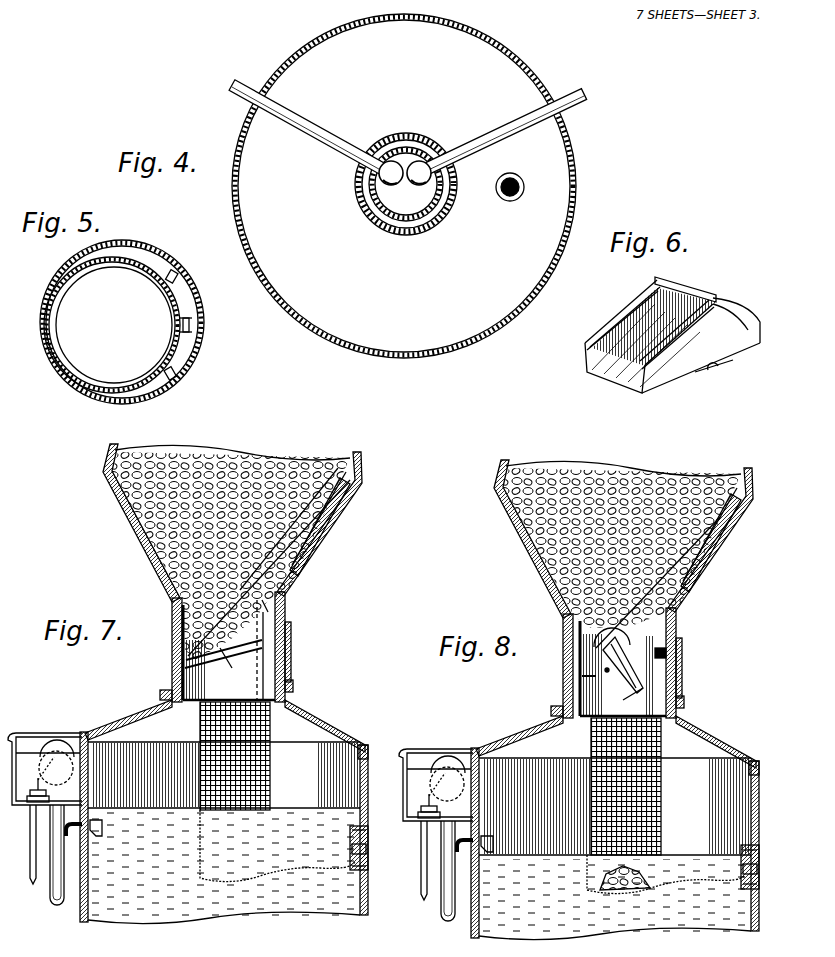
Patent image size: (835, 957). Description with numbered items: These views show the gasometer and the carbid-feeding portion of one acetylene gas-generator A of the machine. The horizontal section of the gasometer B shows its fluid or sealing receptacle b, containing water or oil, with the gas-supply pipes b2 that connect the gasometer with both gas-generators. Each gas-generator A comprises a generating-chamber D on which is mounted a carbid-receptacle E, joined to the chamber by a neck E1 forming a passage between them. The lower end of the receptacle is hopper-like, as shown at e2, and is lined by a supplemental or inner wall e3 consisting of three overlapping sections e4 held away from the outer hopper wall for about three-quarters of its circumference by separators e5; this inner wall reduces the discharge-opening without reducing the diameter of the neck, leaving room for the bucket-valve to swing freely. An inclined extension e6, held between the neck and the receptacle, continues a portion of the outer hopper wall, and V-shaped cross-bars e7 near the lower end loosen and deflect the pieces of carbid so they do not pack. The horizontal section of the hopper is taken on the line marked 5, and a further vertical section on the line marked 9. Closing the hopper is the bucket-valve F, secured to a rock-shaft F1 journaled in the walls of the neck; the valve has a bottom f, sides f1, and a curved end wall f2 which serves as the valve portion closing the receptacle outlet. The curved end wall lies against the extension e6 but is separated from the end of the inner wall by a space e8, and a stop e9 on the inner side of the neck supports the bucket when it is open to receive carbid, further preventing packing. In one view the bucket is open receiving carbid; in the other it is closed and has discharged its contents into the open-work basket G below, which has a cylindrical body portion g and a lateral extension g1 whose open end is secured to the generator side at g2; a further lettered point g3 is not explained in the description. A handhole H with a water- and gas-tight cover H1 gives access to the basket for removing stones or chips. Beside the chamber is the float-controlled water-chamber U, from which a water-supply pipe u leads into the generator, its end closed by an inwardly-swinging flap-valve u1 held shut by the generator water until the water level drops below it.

In FIG. 4, the gasometer B is at (503, 333).
In FIG. 4, the fluid or sealing receptacle b is at (293, 312).
In FIG. 4, the gas-supply pipes b2 is at (236, 90).
In FIG. 5, the carbid-receptacle E is at (198, 356).
In FIG. 7, the carbid-receptacle E is at (297, 460).
In FIG. 8, the carbid-receptacle E is at (614, 544).
In FIG. 7, the neck E1 is at (292, 688).
In FIG. 8, the neck E1 is at (633, 677).
In FIG. 7, the hopper-like lower end e2 is at (312, 561).
In FIG. 8, the hopper-like lower end e2 is at (712, 534).
In FIG. 5, the supplemental or inner wall e3 is at (171, 350).
In FIG. 7, the supplemental or inner wall e3 is at (302, 572).
In FIG. 8, the supplemental or inner wall e3 is at (711, 544).
In FIG. 5, the overlapping sections e4 is at (104, 256).
In FIG. 7, the overlapping sections e4 is at (290, 598).
In FIG. 8, the overlapping sections e4 is at (690, 656).
In FIG. 5, the separators e5 is at (196, 297).
In FIG. 7, the separators e5 is at (338, 535).
In FIG. 8, the separators e5 is at (724, 583).
In FIG. 7, the inclined extension e6 is at (200, 620).
In FIG. 8, the inclined extension e6 is at (626, 588).
In FIG. 7, the cross-bars e7 is at (174, 574).
In FIG. 8, the cross-bars e7 is at (546, 657).
In FIG. 7, the space e8 is at (236, 606).
In FIG. 8, the space e8 is at (566, 675).
In FIG. 7, the stop e9 is at (182, 666).
In FIG. 8, the stop e9 is at (598, 698).
In FIG. 7, the section line 5- 5 is at (160, 549).
In FIG. 7, the section line 9- 9 is at (228, 560).
In FIG. 6, the bucket-valve F is at (722, 296).
In FIG. 7, the bucket-valve F is at (290, 646).
In FIG. 8, the bucket-valve F is at (649, 672).
In FIG. 7, the rock-shaft F1 is at (235, 663).
In FIG. 8, the rock-shaft F1 is at (602, 683).
In FIG. 6, the bottom f is at (620, 371).
In FIG. 7, the bottom f is at (223, 670).
In FIG. 8, the bottom f is at (631, 673).
In FIG. 6, the sides f1 is at (610, 332).
In FIG. 7, the sides f1 is at (276, 626).
In FIG. 8, the sides f1 is at (660, 659).
In FIG. 6, the curved end wall f2 is at (700, 292).
In FIG. 7, the curved end wall f2 is at (185, 646).
In FIG. 7, the gas-generator A is at (322, 720).
In FIG. 8, the gas-generator A is at (617, 745).
In FIG. 7, the generating-chamber D is at (224, 828).
In FIG. 8, the generating-chamber D is at (615, 844).
In FIG. 7, the open-work basket G is at (200, 768).
In FIG. 8, the open-work basket G is at (613, 786).
In FIG. 7, the cylindrical body portion g is at (282, 759).
In FIG. 8, the cylindrical body portion g is at (672, 840).
In FIG. 7, the lateral extension g1 is at (277, 856).
In FIG. 8, the lateral extension g1 is at (666, 890).
In FIG. 7, the securing point of lateral extension g2 is at (368, 862).
In FIG. 8, the securing point of lateral extension g2 is at (754, 894).
In FIG. 7, the outlet g3 is at (328, 954).
In FIG. 7, the handhole H is at (362, 822).
In FIG. 8, the handhole H is at (732, 864).
In FIG. 7, the cover H1 is at (368, 839).
In FIG. 8, the cover H1 is at (759, 845).
In FIG. 7, the float-controlled water-chamber U is at (34, 744).
In FIG. 8, the float-controlled water-chamber U is at (436, 777).
In FIG. 7, the water-supply pipe u is at (36, 876).
In FIG. 8, the water-supply pipe u is at (437, 876).
In FIG. 7, the flap-valve u1 is at (104, 827).
In FIG. 8, the flap-valve u1 is at (504, 841).